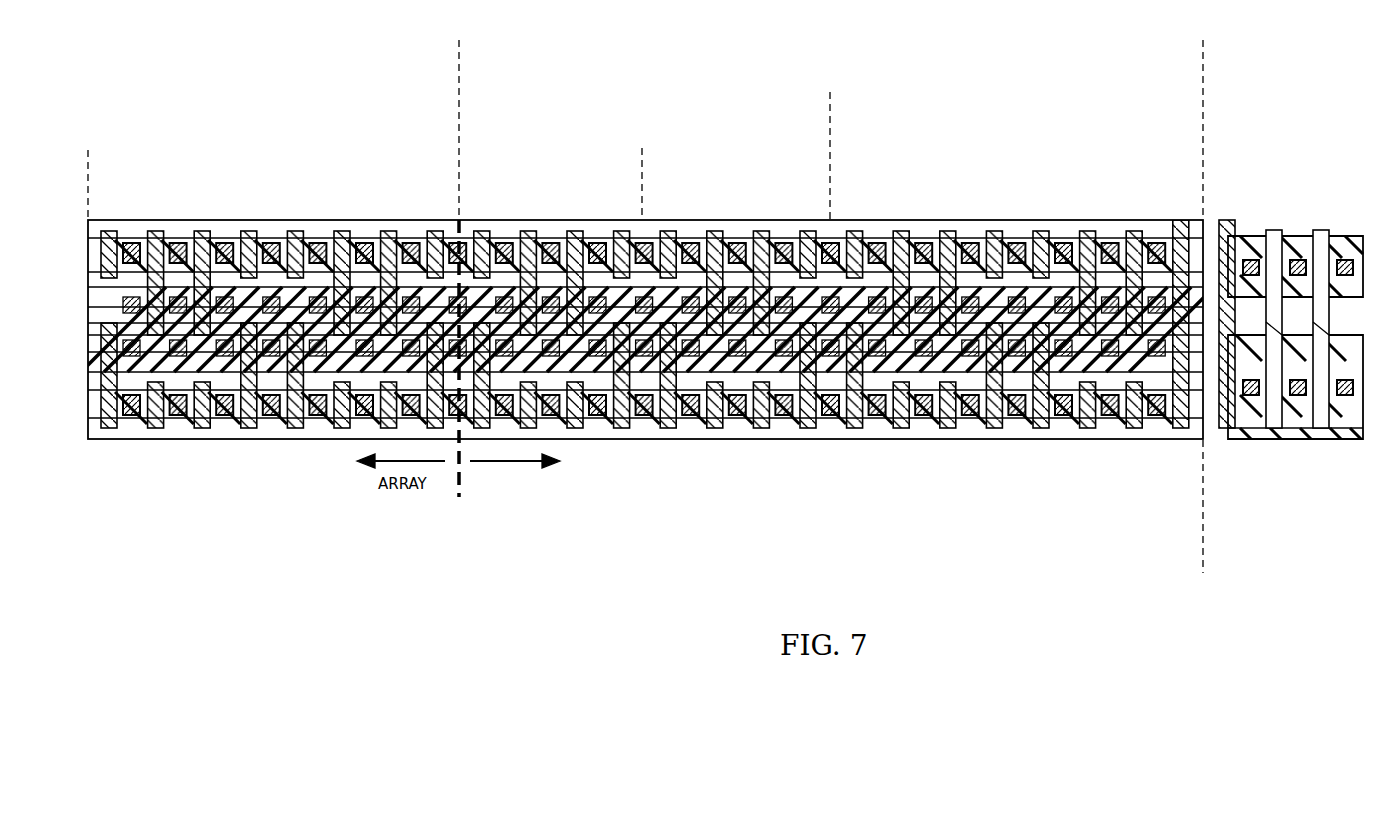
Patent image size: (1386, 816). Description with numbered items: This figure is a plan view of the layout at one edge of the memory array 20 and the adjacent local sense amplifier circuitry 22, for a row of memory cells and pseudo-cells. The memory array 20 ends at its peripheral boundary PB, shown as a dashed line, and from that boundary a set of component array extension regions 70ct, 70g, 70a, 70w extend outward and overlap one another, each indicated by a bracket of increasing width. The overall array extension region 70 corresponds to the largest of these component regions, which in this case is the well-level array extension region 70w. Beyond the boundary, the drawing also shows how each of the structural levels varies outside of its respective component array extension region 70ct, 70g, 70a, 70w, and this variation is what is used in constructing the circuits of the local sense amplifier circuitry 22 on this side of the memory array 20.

The memory array 20 is at (457, 152).
The array extension region 70 is at (459, 568).
The well-level array extension region 70w is at (1203, 42).
The component array extension region 70a is at (830, 94).
The component array extension region 70g is at (642, 151).
The component array extension region 70ct is at (548, 202).
The peripheral boundary PB is at (452, 184).
The local sense amplifier circuitry 22 is at (509, 463).